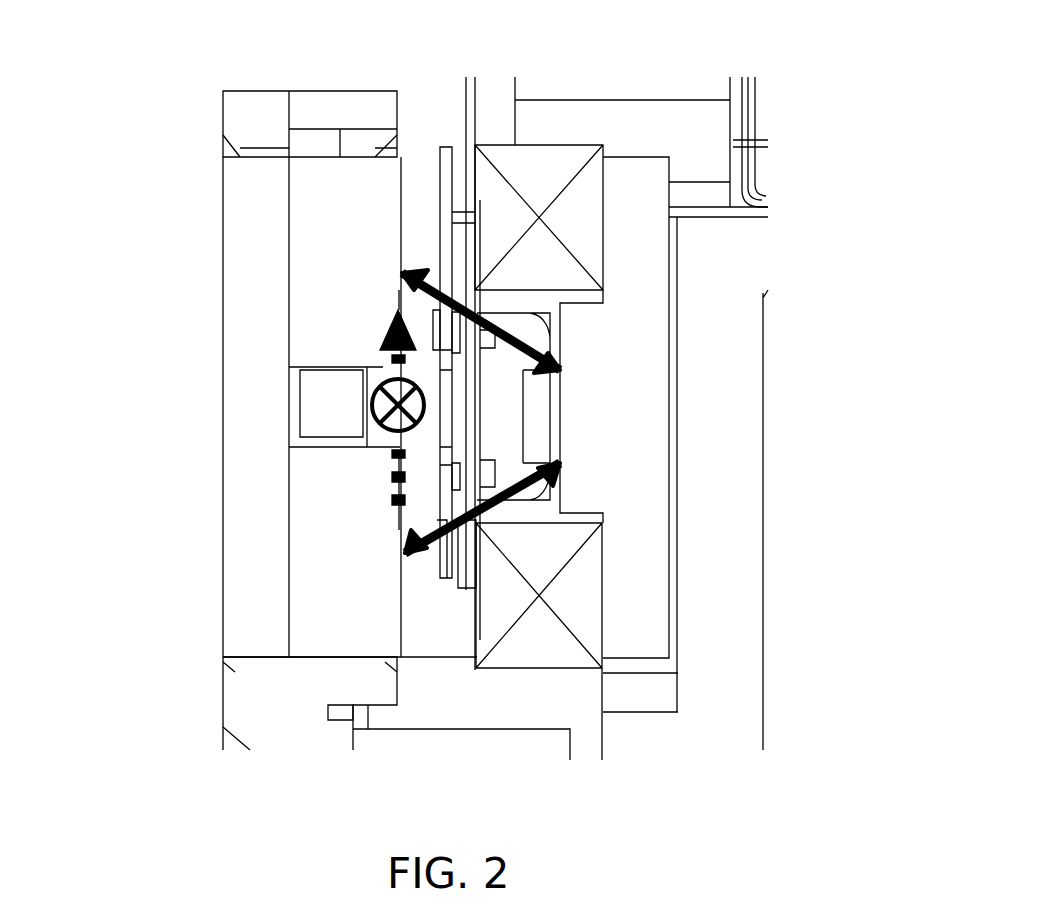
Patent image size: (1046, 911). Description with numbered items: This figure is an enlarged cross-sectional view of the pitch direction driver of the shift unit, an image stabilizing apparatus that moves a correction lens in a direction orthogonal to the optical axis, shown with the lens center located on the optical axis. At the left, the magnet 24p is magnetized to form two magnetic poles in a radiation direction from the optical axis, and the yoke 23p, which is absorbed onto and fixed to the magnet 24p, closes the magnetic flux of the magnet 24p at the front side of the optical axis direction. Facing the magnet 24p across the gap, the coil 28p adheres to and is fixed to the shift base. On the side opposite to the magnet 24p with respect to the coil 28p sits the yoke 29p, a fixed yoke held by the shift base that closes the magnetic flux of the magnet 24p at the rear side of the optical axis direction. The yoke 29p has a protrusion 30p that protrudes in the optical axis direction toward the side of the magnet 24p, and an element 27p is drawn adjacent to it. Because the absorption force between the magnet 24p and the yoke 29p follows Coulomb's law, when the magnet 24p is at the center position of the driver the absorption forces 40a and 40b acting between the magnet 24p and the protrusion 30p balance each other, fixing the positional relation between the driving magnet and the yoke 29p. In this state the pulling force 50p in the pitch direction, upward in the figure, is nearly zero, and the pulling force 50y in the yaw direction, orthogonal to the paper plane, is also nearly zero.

The yoke 23p is at (248, 265).
The magnet 24p is at (313, 207).
The pulling force in the yaw direction 50y is at (370, 397).
The pulling force in the pitch direction 50p is at (397, 455).
The absorption force 40a is at (432, 268).
The absorption force 40b is at (403, 557).
The coil 28p is at (529, 160).
The yoke 29p is at (635, 593).
The armature 27p is at (522, 410).
The protrusion 30p is at (583, 352).